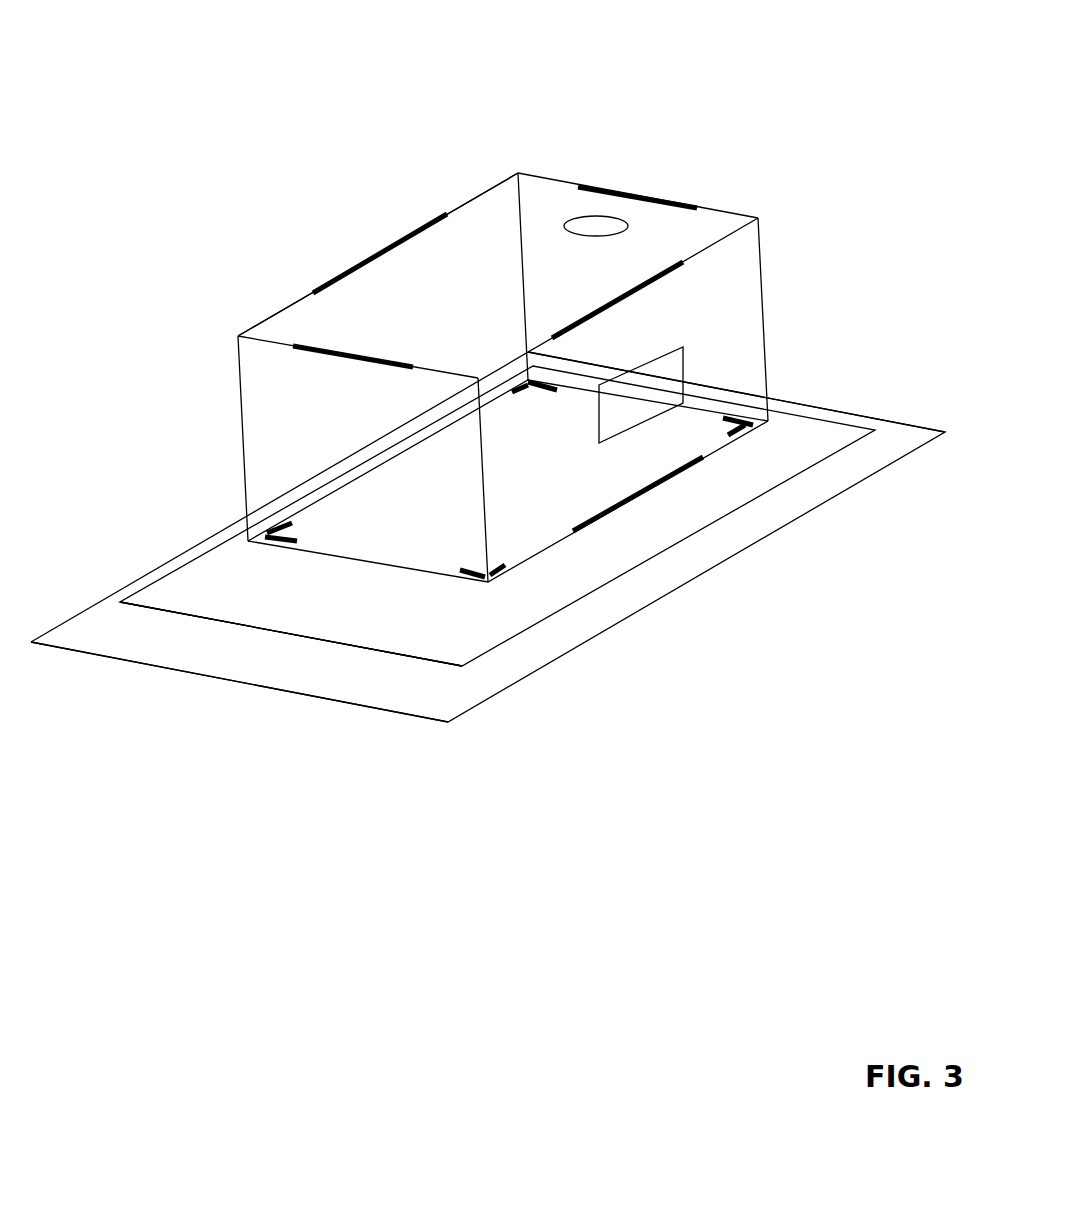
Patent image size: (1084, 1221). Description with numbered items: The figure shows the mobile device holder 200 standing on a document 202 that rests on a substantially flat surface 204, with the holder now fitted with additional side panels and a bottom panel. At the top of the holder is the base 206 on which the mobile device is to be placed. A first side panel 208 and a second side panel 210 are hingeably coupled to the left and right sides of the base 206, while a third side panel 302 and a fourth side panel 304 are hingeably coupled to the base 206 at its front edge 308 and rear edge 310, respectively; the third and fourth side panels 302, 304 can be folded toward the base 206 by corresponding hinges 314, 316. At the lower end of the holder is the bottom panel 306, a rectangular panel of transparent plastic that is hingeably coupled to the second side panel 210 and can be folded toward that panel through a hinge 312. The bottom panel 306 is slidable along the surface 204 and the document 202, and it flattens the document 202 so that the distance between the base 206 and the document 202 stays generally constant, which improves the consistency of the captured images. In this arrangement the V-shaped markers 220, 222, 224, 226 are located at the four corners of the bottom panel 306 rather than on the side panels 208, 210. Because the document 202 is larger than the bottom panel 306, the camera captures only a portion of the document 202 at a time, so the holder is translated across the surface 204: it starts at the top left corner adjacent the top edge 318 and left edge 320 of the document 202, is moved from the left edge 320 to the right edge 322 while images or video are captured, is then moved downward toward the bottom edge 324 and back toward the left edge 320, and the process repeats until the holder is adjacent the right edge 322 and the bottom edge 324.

The mobile device holder 200 is at (228, 48).
The document 202 is at (218, 622).
The surface 204 is at (255, 688).
The base 206 is at (556, 200).
The first side panel 208 is at (285, 304).
The second side panel 210 is at (588, 527).
The marker 220 is at (262, 530).
The marker 222 is at (520, 385).
The marker 224 is at (470, 578).
The marker 226 is at (745, 440).
The third side panel 302 is at (770, 300).
The fourth side panel 304 is at (240, 437).
The bottom panel 306 is at (527, 563).
The front edge 308 is at (720, 202).
The rear edge 310 is at (270, 343).
The hinge 312 is at (653, 490).
The hinge 314 is at (615, 184).
The hinge 316 is at (330, 356).
The top edge 318 is at (820, 416).
The left edge 320 is at (137, 585).
The right edge 322 is at (505, 643).
The bottom edge 324 is at (307, 640).